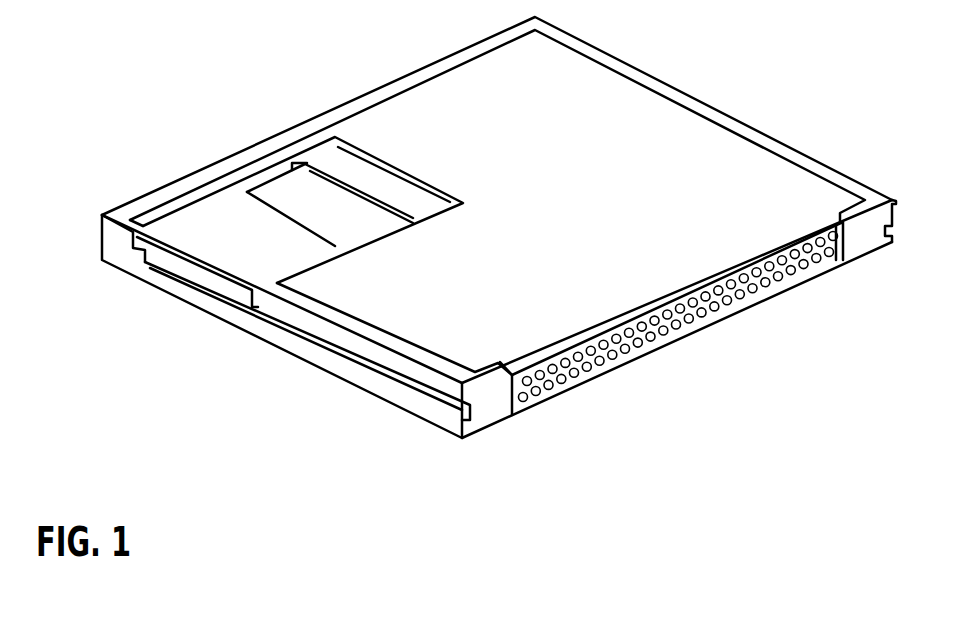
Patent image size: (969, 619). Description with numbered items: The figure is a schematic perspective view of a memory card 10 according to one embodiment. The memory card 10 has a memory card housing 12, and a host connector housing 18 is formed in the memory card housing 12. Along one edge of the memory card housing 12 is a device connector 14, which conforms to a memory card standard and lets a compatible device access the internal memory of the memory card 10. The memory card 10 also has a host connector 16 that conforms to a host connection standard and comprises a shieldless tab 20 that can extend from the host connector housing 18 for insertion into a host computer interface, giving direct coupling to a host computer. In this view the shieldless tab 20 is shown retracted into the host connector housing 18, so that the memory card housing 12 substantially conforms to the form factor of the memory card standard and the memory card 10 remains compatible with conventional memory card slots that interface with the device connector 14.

The memory card 10 is at (212, 66).
The memory card housing 12 is at (736, 145).
The device connector 14 is at (678, 347).
The host connector 16 is at (395, 245).
The host connector housing 18 is at (415, 178).
The shieldless tab 20 is at (305, 253).